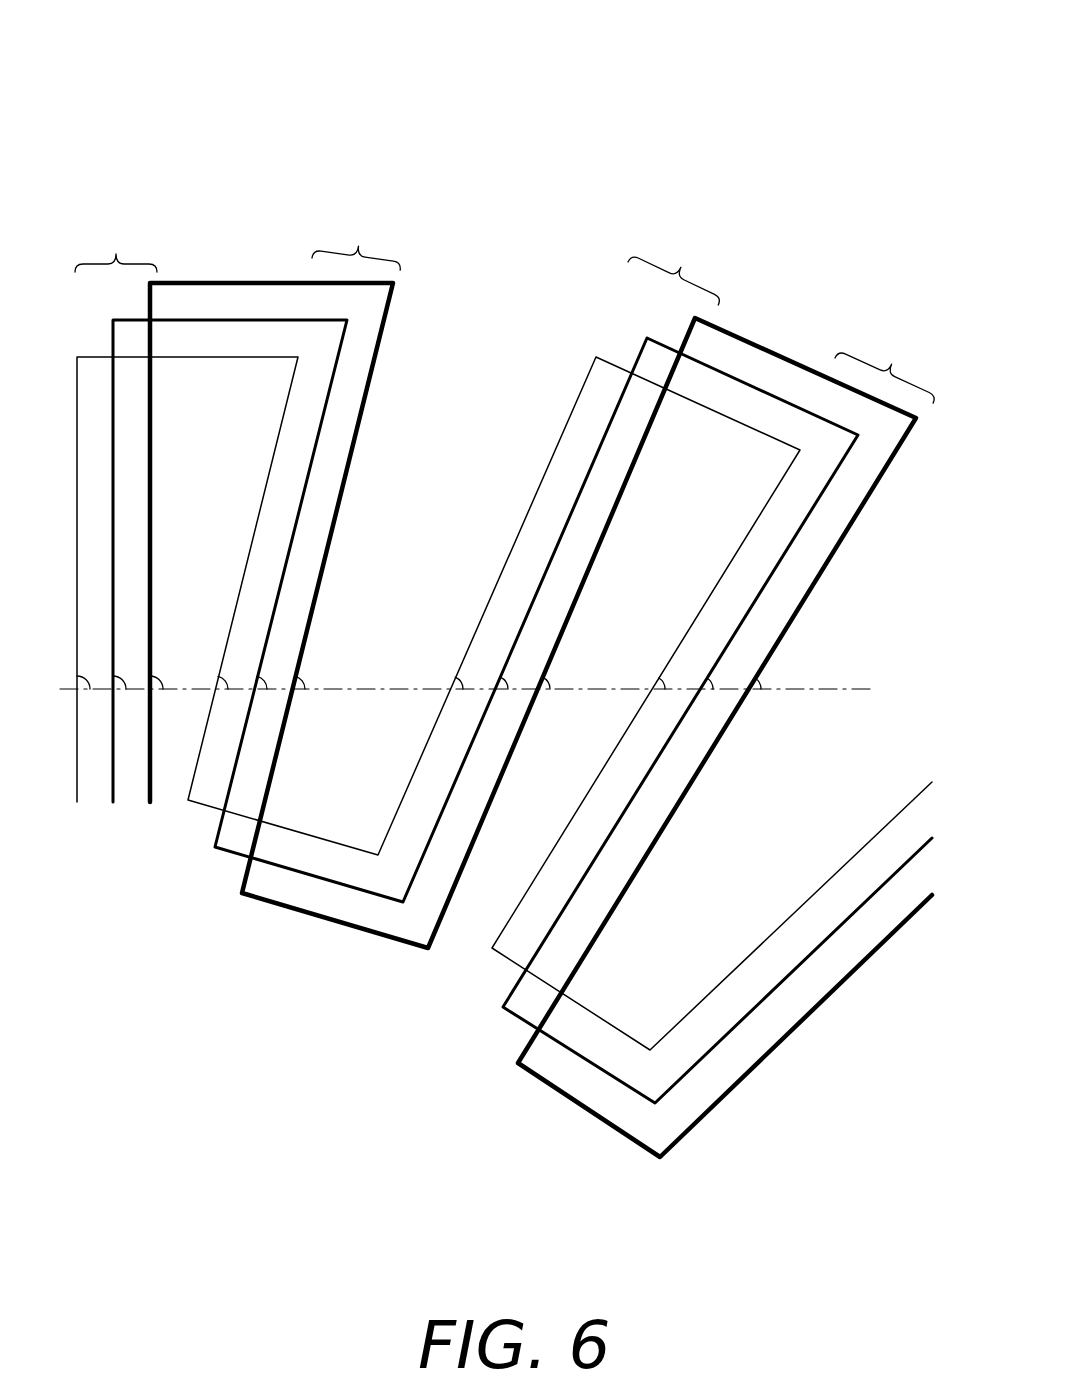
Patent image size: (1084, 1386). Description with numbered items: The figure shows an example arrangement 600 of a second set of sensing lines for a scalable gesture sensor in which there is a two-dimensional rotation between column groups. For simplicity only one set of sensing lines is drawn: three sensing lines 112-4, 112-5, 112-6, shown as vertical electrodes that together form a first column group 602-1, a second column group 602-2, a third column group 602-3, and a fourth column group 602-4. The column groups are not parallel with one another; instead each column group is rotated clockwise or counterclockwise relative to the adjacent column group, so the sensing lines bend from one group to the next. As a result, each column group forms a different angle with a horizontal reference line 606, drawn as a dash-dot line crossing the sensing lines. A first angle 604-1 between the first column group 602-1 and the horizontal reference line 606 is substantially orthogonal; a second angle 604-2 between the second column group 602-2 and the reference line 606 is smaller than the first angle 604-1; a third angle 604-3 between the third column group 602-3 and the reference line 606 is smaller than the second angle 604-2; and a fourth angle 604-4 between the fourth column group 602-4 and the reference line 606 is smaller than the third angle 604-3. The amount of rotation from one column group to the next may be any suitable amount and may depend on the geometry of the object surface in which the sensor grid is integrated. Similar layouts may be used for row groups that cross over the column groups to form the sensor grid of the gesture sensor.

The example arrangement 600 is at (146, 28).
The sensing line 112-4 is at (198, 805).
The sensing line 112-5 is at (230, 852).
The sensing line 112-6 is at (262, 899).
The first column group 602-1 is at (116, 246).
The second column group 602-2 is at (357, 245).
The third column group 602-3 is at (684, 274).
The fourth column group 602-4 is at (888, 372).
The first angle 604-1 is at (162, 683).
The second angle 604-2 is at (302, 683).
The third angle 604-3 is at (548, 679).
The fourth angle 604-4 is at (759, 679).
The horizontal reference line 606 is at (405, 694).